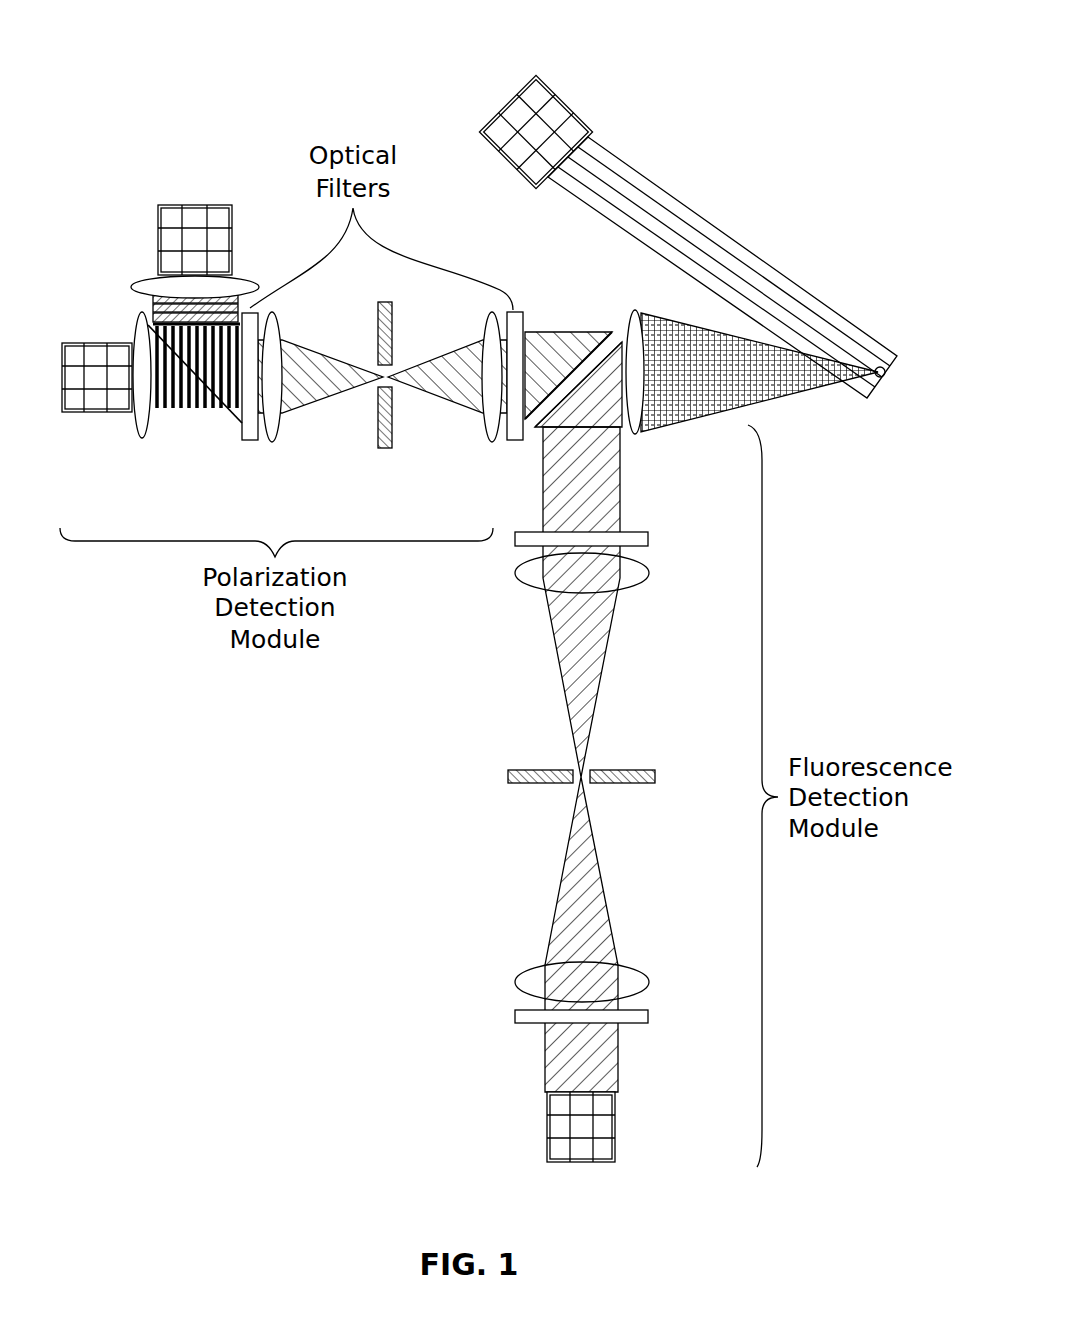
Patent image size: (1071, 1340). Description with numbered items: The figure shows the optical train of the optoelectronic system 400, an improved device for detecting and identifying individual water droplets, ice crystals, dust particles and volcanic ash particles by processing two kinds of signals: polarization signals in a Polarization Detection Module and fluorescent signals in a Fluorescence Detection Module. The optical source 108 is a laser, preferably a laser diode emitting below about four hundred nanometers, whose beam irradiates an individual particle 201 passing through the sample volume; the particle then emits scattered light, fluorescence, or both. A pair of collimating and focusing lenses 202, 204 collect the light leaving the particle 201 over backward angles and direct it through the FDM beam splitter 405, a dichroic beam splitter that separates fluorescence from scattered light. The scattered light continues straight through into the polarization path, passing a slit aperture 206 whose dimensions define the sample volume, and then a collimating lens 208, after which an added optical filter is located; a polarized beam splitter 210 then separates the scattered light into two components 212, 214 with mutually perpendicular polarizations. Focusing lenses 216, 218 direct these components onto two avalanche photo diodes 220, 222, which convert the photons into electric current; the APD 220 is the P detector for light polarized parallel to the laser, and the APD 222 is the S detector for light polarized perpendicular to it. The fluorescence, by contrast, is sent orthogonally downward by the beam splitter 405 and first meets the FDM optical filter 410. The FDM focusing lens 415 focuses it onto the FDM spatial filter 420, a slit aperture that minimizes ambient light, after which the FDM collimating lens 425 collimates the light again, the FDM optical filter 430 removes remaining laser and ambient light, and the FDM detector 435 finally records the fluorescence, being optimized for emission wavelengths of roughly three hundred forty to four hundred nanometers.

The optoelectronic system 400 is at (138, 36).
The optical source 108 is at (558, 104).
The particle 201 is at (884, 380).
The collimating and focusing lens 202 is at (637, 435).
The collimating and focusing lens 204 is at (492, 443).
The slit aperture 206 is at (388, 450).
The collimating lens 208 is at (273, 442).
The polarized beam splitter 210 is at (230, 420).
The polarization component 212 is at (195, 405).
The polarization component 214 is at (250, 313).
The focusing lens 216 is at (133, 285).
The focusing lens 218 is at (142, 440).
The avalanche photo diode 220 is at (96, 343).
The avalanche photo diode 222 is at (193, 204).
The FDM beam splitter 405 is at (607, 331).
The FDM optical filter 1 410 is at (648, 539).
The FDM focusing lens 415 is at (649, 575).
The FDM spatial filter 420 is at (655, 777).
The FDM collimating lens 425 is at (649, 985).
The FDM optical filter 2 430 is at (648, 1017).
The FDM APD/detector 435 is at (615, 1125).